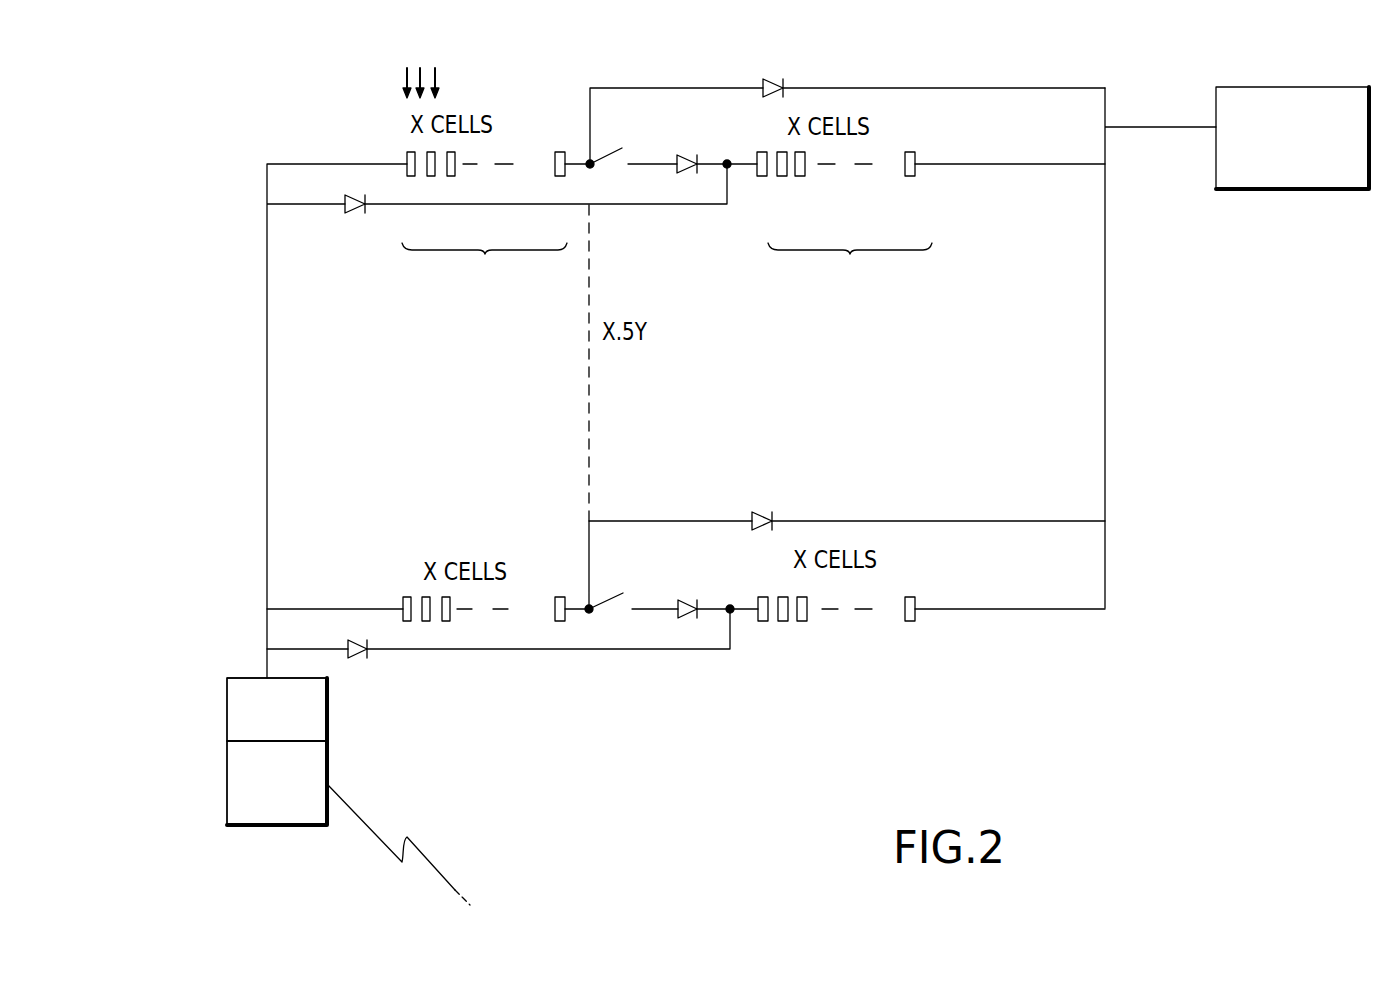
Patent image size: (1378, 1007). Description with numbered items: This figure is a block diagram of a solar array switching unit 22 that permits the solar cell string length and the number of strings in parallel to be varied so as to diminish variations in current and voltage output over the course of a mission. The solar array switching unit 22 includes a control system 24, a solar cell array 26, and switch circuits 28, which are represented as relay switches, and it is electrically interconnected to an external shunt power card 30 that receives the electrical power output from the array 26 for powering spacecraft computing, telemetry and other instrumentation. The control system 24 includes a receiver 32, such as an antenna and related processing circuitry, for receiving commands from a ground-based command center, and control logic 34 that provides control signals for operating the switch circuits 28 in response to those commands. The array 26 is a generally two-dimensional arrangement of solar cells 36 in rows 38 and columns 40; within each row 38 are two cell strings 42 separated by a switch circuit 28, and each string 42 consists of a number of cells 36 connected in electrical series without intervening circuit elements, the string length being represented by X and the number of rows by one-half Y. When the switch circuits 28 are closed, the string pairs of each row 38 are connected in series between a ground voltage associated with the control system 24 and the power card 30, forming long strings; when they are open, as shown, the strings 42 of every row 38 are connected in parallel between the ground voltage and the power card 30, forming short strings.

The solar array switching unit 22 is at (995, 62).
The control system 24 is at (353, 731).
The solar cell array 26 is at (1140, 359).
The switch circuit 28 is at (613, 146).
The shunt power card 30 is at (1292, 190).
The receiver 32 is at (327, 773).
The control logic 34 is at (227, 712).
The solar cell 36 is at (432, 177).
The row 38 is at (252, 183).
The column 40 is at (421, 64).
The cell string 42 is at (667, 266).